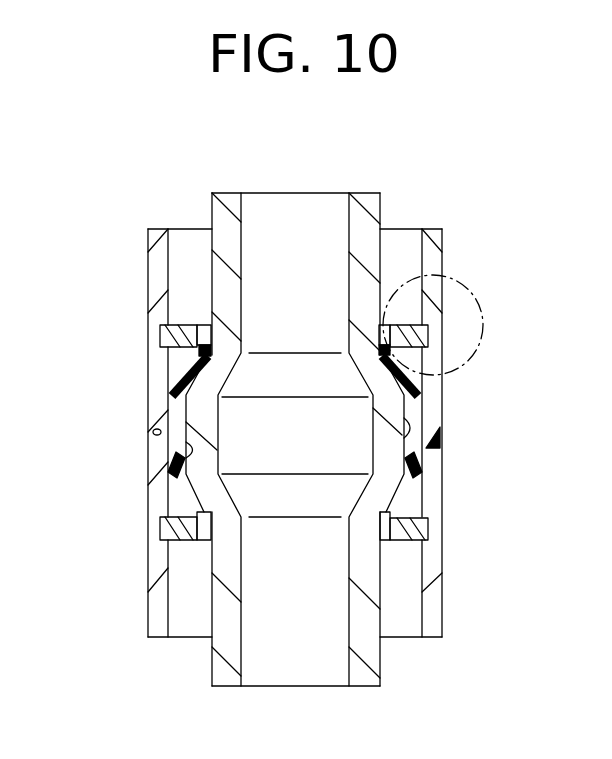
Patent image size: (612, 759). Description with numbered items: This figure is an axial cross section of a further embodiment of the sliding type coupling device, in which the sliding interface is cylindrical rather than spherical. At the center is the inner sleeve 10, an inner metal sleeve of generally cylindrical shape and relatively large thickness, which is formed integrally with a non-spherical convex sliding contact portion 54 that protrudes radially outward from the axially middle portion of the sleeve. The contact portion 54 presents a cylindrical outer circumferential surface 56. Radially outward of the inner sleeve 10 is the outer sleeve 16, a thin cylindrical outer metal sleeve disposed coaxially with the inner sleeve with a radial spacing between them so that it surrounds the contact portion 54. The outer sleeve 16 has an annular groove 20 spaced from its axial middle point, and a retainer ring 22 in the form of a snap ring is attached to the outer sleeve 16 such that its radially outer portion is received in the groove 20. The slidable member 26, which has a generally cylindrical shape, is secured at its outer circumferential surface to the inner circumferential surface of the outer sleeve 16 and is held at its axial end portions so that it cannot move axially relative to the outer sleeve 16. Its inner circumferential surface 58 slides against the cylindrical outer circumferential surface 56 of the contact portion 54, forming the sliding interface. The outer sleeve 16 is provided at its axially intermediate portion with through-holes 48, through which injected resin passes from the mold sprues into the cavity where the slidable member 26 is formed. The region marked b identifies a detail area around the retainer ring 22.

The inner sleeve 10 is at (400, 178).
The outer sleeve 16 is at (450, 606).
The annular groove 20 is at (187, 326).
The retainer ring 22 is at (428, 334).
The slidable member 26 is at (410, 484).
The through-holes 48 is at (165, 432).
The non-spherical convex sliding contact portion 54 is at (207, 420).
The cylindrical outer circumferential surface 56 is at (404, 431).
The inner circumferential surface 58 is at (186, 450).
The detail region b is at (458, 278).